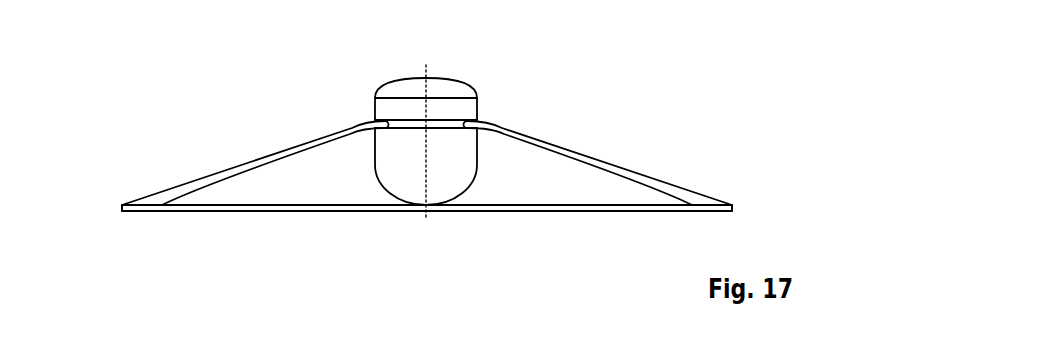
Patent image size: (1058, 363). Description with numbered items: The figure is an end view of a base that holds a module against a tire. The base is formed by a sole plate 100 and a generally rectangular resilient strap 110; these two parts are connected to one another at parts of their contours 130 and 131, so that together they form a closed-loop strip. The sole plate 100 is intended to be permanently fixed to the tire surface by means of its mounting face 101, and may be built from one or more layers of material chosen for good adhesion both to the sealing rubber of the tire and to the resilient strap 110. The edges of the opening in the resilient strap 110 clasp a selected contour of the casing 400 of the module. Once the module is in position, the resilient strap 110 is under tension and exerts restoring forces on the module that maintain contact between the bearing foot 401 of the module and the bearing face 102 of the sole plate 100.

The sole plate 100 is at (427, 237).
The mounting face 101 is at (563, 212).
The bearing face 102 is at (542, 204).
The resilient strap 110 is at (250, 163).
The contour connection part 130 is at (133, 207).
The contour connection part 131 is at (733, 210).
The casing 400 is at (408, 112).
The bearing foot 401 is at (413, 195).